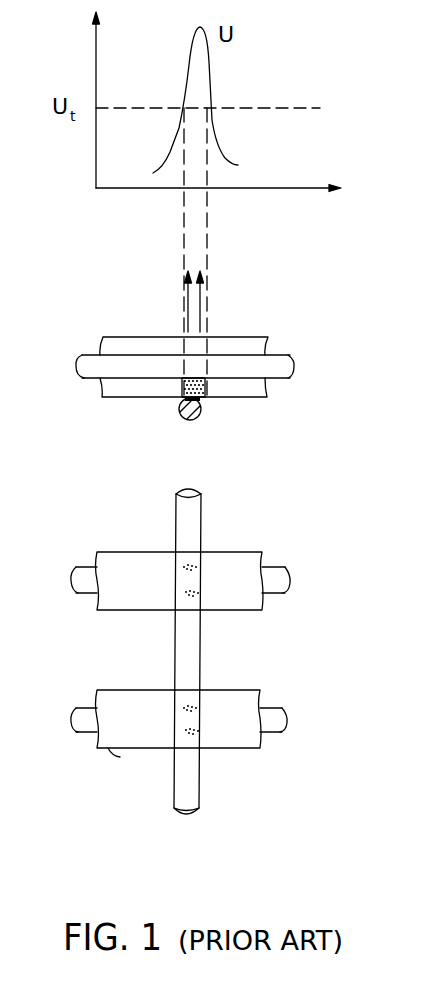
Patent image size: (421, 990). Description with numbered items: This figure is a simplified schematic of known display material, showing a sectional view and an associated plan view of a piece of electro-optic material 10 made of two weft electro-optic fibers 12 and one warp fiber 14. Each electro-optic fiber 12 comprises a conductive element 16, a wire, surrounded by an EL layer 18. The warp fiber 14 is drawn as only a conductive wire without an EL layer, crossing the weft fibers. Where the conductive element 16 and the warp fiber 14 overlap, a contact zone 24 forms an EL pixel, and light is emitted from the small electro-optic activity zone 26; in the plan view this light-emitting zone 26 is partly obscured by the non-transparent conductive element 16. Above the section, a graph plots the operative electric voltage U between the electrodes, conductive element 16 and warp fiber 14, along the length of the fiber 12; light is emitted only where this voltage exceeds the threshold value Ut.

The electro-optic material 10 is at (283, 545).
The weft electro-optic fiber 12 is at (287, 324).
The warp fiber 14 is at (141, 433).
The conductive element 16 is at (78, 365).
The EL layer 18 is at (105, 337).
The contact zone 24 is at (200, 400).
The electro-optic activity zone 26 is at (181, 380).